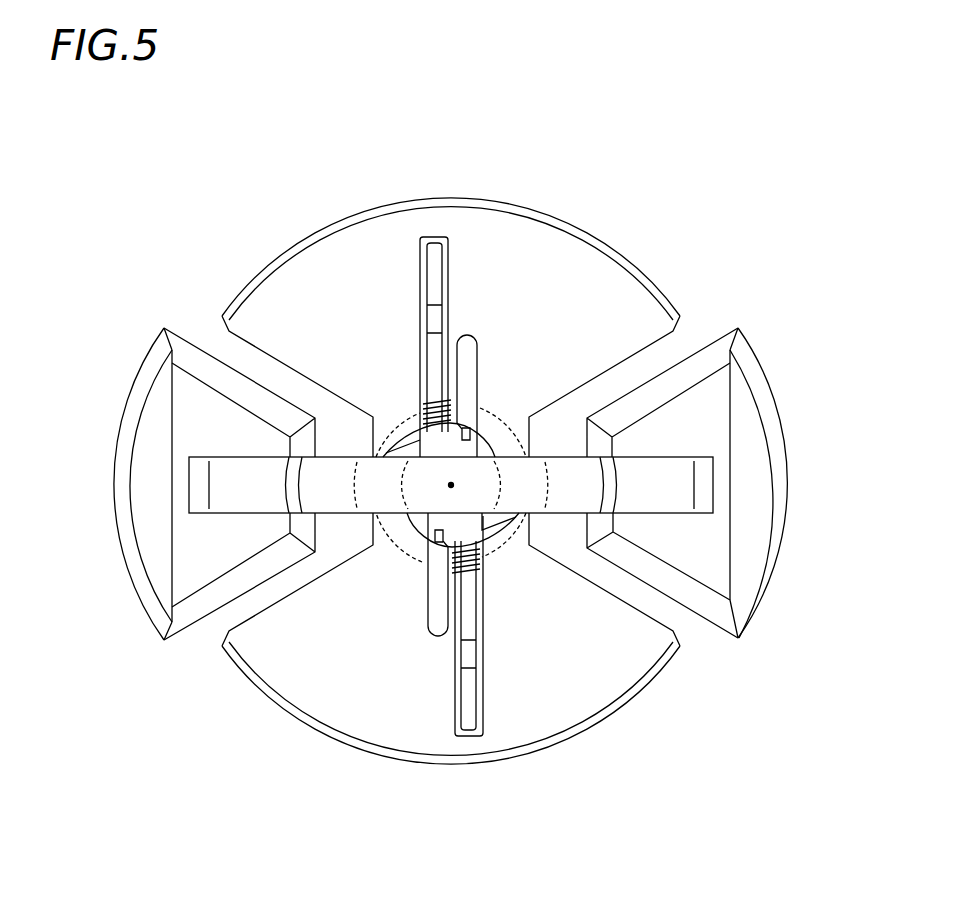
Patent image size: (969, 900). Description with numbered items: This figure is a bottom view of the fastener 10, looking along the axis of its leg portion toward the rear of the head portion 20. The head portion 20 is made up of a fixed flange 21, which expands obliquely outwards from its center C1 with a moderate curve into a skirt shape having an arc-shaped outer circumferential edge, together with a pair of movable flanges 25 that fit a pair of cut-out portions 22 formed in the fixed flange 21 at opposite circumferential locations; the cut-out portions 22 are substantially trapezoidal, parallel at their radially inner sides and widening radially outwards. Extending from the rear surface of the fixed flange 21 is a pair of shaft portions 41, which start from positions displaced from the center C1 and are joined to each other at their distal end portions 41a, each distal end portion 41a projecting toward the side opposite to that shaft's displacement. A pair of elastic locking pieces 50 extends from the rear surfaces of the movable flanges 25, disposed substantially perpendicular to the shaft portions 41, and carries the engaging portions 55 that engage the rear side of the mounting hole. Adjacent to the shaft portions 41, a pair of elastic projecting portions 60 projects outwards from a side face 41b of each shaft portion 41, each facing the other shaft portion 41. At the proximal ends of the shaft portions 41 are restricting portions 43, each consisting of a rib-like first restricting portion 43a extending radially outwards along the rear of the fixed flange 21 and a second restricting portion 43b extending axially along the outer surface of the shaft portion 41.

The fastener 10 is at (403, 165).
The head portion 20 is at (369, 207).
The fixed flange 21 is at (488, 222).
The cut-out portions 22 is at (232, 342).
The movable flanges 25 is at (133, 414).
The shaft portions 41 is at (424, 424).
The distal end portion 41a is at (476, 400).
The side face 41b is at (456, 440).
The restricting portions 43 is at (688, 758).
The first restricting portion 43a is at (432, 275).
The second restricting portion 43b is at (481, 575).
The elastic locking pieces 50 is at (559, 449).
The engaging portions 55 is at (612, 466).
The elastic projecting portions 60 is at (464, 337).
The center C1 is at (450, 488).